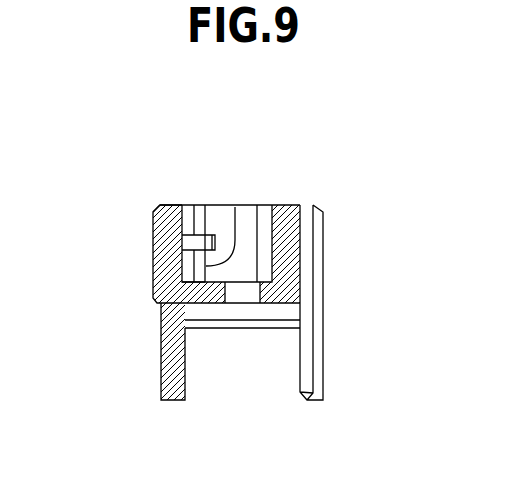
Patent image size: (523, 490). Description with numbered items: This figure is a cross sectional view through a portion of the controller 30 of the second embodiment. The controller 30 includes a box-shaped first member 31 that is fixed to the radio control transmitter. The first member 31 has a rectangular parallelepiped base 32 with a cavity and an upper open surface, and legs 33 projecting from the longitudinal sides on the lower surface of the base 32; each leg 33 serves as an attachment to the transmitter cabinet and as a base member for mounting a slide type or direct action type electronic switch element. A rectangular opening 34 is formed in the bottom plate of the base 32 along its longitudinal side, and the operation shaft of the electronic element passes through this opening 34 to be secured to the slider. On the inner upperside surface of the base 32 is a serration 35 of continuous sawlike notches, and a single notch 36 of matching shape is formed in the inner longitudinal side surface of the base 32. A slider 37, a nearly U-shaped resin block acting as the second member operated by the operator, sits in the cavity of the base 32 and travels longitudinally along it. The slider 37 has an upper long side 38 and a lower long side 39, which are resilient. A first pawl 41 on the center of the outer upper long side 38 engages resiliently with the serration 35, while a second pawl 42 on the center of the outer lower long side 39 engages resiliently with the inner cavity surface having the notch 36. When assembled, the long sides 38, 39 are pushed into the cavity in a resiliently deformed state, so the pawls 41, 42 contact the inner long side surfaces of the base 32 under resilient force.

The controller 30 is at (342, 138).
The first member 31 is at (76, 287).
The base 32 is at (153, 287).
The legs 33 is at (162, 375).
The rectangular opening 34 is at (243, 293).
The serration 35 is at (155, 223).
The notch 36 is at (155, 262).
The slider 37 is at (245, 205).
The upper long side 38 is at (196, 205).
The lower long side 39 is at (235, 205).
The first pawl 41 is at (188, 205).
The second pawl 42 is at (187, 284).